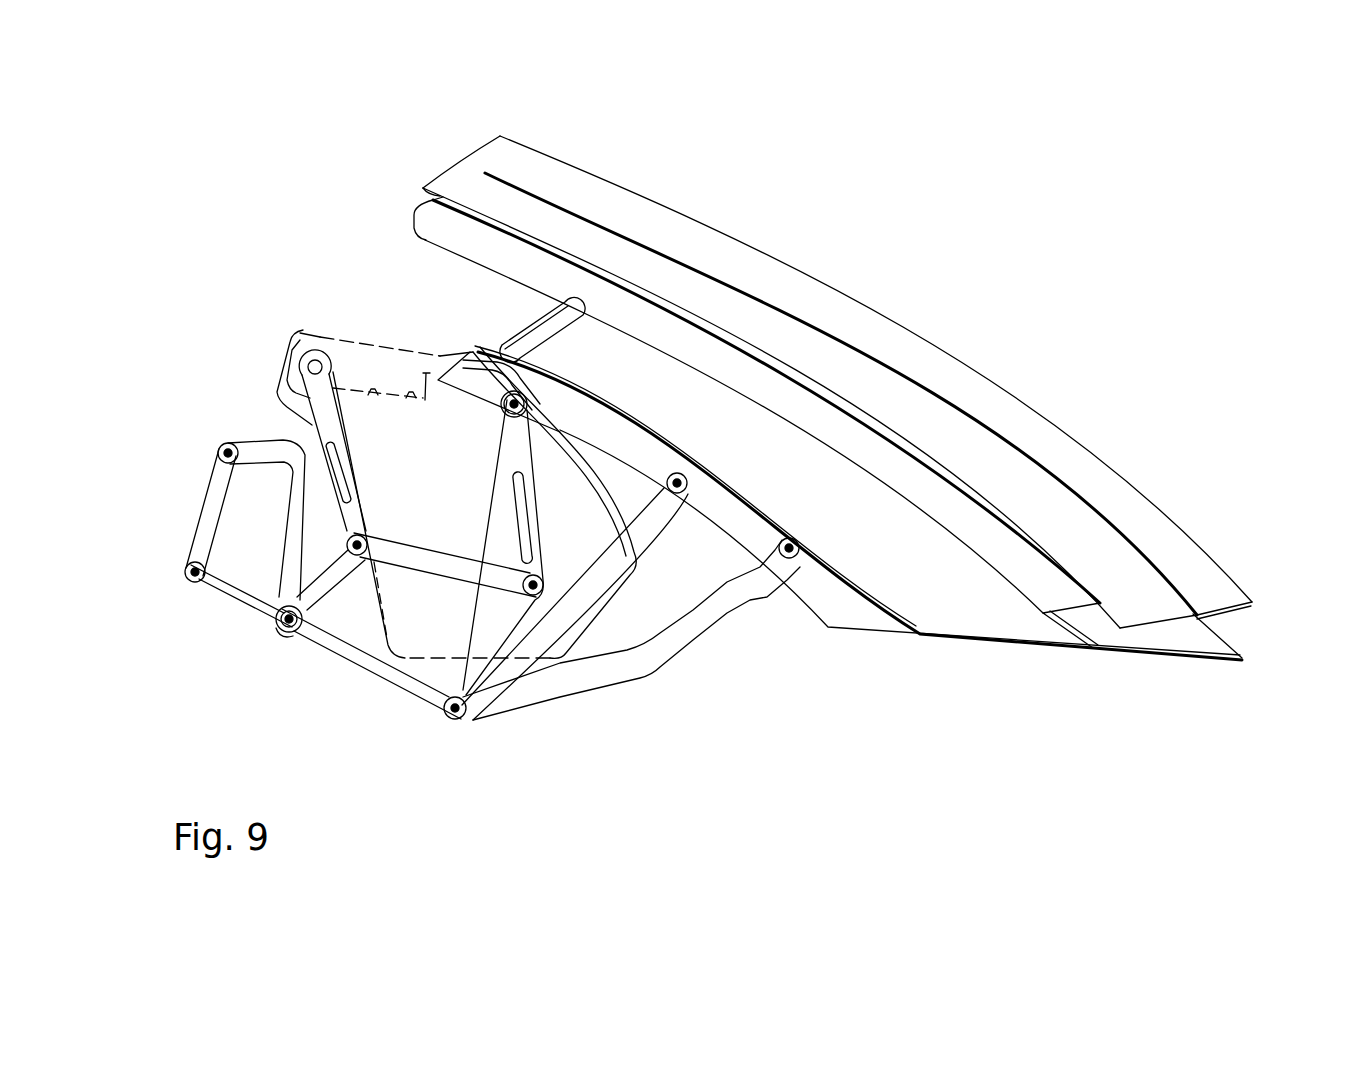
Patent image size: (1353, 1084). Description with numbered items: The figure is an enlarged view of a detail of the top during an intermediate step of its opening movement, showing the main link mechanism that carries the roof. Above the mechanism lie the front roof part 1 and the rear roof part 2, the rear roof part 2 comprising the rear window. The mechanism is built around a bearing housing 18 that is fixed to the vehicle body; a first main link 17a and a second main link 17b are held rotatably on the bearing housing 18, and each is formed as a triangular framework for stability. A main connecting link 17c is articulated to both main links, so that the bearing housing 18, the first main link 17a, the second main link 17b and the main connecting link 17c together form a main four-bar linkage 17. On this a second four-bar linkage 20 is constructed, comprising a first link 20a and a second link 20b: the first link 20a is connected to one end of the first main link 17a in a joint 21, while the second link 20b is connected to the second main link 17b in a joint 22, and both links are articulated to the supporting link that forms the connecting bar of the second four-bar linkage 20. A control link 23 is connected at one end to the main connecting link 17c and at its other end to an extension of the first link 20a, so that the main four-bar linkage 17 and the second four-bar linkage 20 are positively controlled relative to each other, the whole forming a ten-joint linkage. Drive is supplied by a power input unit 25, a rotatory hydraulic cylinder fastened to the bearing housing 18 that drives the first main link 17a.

The front roof part 1 is at (730, 262).
The rear roof part 2 is at (920, 583).
The main four-bar linkage 17 is at (448, 518).
The first main link 17a is at (317, 418).
The second main link 17b is at (488, 495).
The main connecting link 17c is at (415, 548).
The bearing housing 18 is at (440, 417).
The second four-bar linkage 20 is at (677, 572).
The first link 20a is at (327, 637).
The second link 20b is at (553, 688).
The joint 21 is at (280, 602).
The joint 22 is at (457, 720).
The control link 23 is at (198, 535).
The power input unit 25 is at (343, 357).